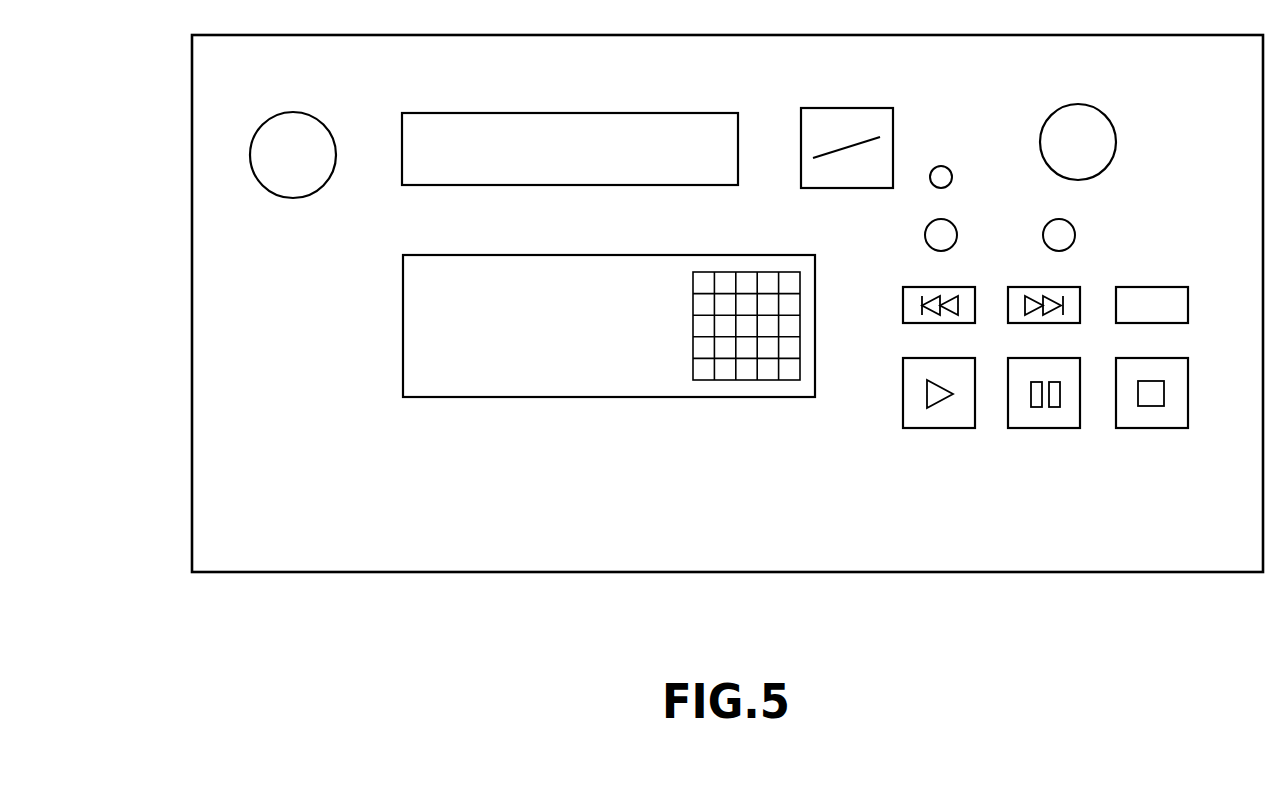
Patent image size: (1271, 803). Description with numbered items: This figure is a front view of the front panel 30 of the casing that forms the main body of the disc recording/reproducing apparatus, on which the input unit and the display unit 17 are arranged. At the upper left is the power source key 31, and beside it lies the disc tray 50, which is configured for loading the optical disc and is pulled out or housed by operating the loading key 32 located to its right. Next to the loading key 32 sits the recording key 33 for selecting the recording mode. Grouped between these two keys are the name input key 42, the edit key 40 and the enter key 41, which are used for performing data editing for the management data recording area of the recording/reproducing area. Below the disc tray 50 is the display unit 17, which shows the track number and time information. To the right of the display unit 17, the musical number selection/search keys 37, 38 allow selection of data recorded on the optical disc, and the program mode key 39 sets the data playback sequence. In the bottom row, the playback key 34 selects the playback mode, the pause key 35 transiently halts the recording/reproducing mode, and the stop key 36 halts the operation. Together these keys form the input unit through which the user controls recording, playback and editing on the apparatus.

The front panel 30 is at (412, 548).
The power source key 31 is at (322, 122).
The disc tray 50 is at (647, 113).
The loading key 32 is at (864, 108).
The recording key 33 is at (1105, 115).
The name input key 42 is at (952, 177).
The edit key 40 is at (925, 238).
The enter key 41 is at (1075, 235).
The display unit 17 is at (695, 398).
The musical number selection/search key 37 is at (903, 311).
The musical number selection/search key 38 is at (1081, 306).
The program mode key 39 is at (1188, 306).
The playback key 34 is at (943, 430).
The pause key 35 is at (1045, 430).
The stop key 36 is at (1152, 420).